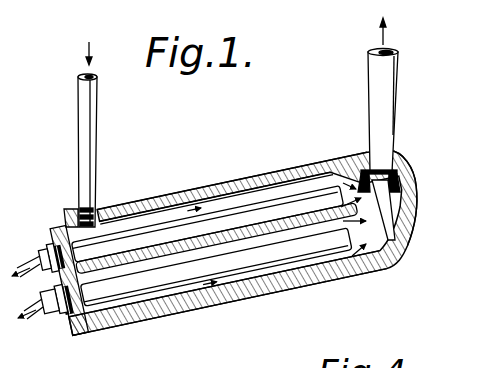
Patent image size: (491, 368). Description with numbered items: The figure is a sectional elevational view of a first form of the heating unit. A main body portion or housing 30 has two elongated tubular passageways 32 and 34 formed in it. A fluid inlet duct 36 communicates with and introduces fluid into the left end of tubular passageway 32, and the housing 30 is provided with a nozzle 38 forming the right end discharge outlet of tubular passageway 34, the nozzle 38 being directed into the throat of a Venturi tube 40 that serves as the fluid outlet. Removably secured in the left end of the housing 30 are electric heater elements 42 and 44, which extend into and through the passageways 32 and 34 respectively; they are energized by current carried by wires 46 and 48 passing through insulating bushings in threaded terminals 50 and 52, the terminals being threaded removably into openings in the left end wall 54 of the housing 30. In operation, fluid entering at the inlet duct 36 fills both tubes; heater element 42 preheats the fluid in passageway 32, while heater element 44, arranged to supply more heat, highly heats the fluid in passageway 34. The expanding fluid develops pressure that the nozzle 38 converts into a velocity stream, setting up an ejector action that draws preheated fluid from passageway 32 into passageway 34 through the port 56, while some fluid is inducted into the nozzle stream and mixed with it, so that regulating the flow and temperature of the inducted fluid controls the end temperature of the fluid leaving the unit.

The main body portion or housing 30 is at (318, 292).
The tubular passageway 32 is at (253, 177).
The tubular passageway 34 is at (258, 280).
The fluid inlet duct 36 is at (77, 183).
The nozzle 38 is at (417, 208).
The Venturi tube 40 is at (408, 167).
The electric heater element 42 is at (119, 241).
The electric heater element 44 is at (123, 308).
The wire 46 is at (38, 252).
The wire 48 is at (43, 318).
The threaded terminal 50 is at (48, 240).
The threaded terminal 52 is at (53, 298).
The left end wall 54 is at (398, 112).
The port 56 is at (173, 316).